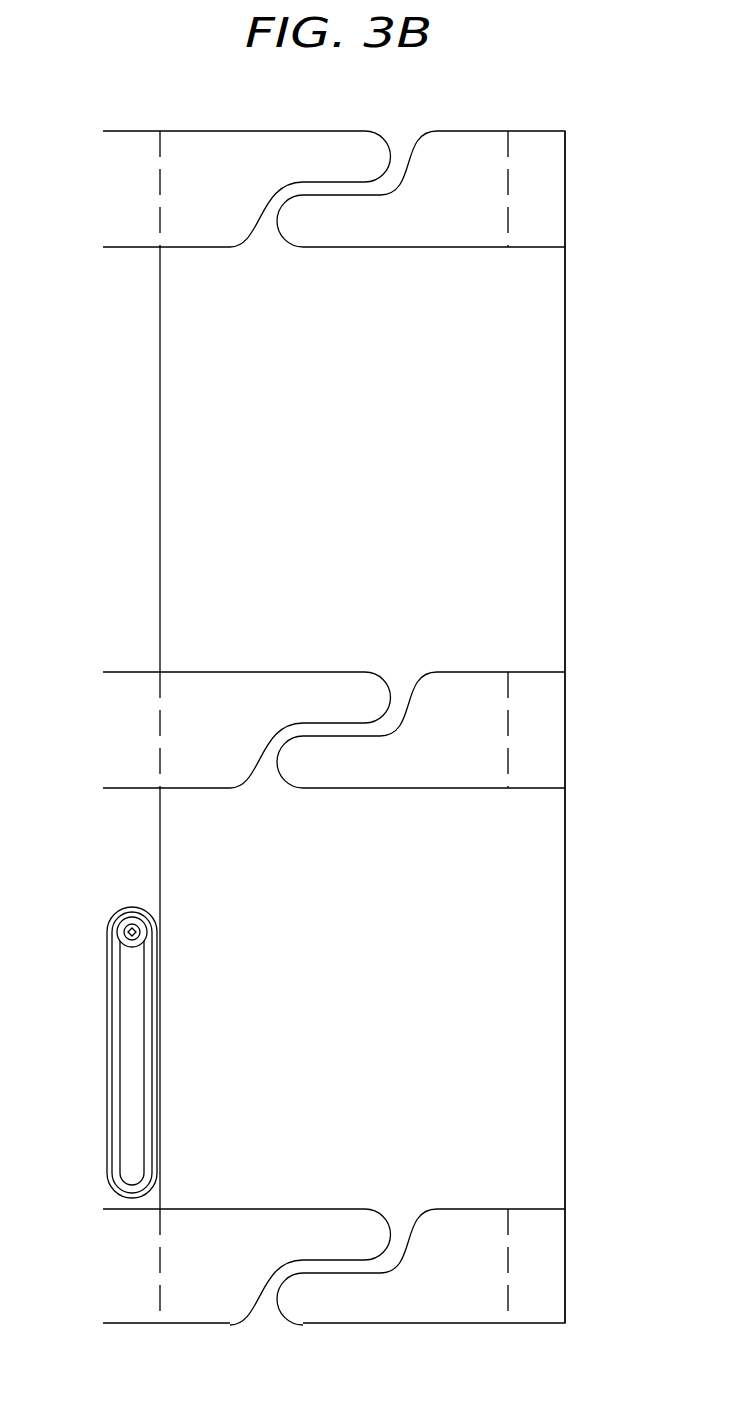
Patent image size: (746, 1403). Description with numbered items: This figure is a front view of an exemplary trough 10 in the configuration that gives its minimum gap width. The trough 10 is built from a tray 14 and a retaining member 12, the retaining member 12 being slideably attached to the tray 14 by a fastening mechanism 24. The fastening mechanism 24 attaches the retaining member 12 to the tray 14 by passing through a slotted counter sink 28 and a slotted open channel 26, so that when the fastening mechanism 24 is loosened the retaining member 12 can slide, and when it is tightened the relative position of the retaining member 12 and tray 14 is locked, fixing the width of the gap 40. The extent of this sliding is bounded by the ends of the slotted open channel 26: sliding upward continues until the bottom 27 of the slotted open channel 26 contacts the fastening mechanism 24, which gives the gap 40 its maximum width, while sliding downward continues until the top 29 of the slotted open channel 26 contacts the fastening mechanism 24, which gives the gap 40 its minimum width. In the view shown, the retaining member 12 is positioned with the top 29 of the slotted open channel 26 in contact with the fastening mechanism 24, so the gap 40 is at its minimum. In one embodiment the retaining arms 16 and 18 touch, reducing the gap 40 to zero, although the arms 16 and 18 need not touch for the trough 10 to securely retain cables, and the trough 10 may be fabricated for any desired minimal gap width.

The trough 10 is at (606, 167).
The retaining member 12 is at (103, 533).
The tray 14 is at (565, 461).
The retaining arm 16 is at (215, 247).
The retaining arm 18 is at (433, 247).
The gap 40 is at (333, 188).
The fastening mechanism 24 is at (124, 930).
The slotted open channel 26 is at (130, 1057).
The bottom of slotted open channel 27 is at (132, 1185).
The slotted counter sink 28 is at (112, 1140).
The top of slotted open channel 29 is at (130, 919).